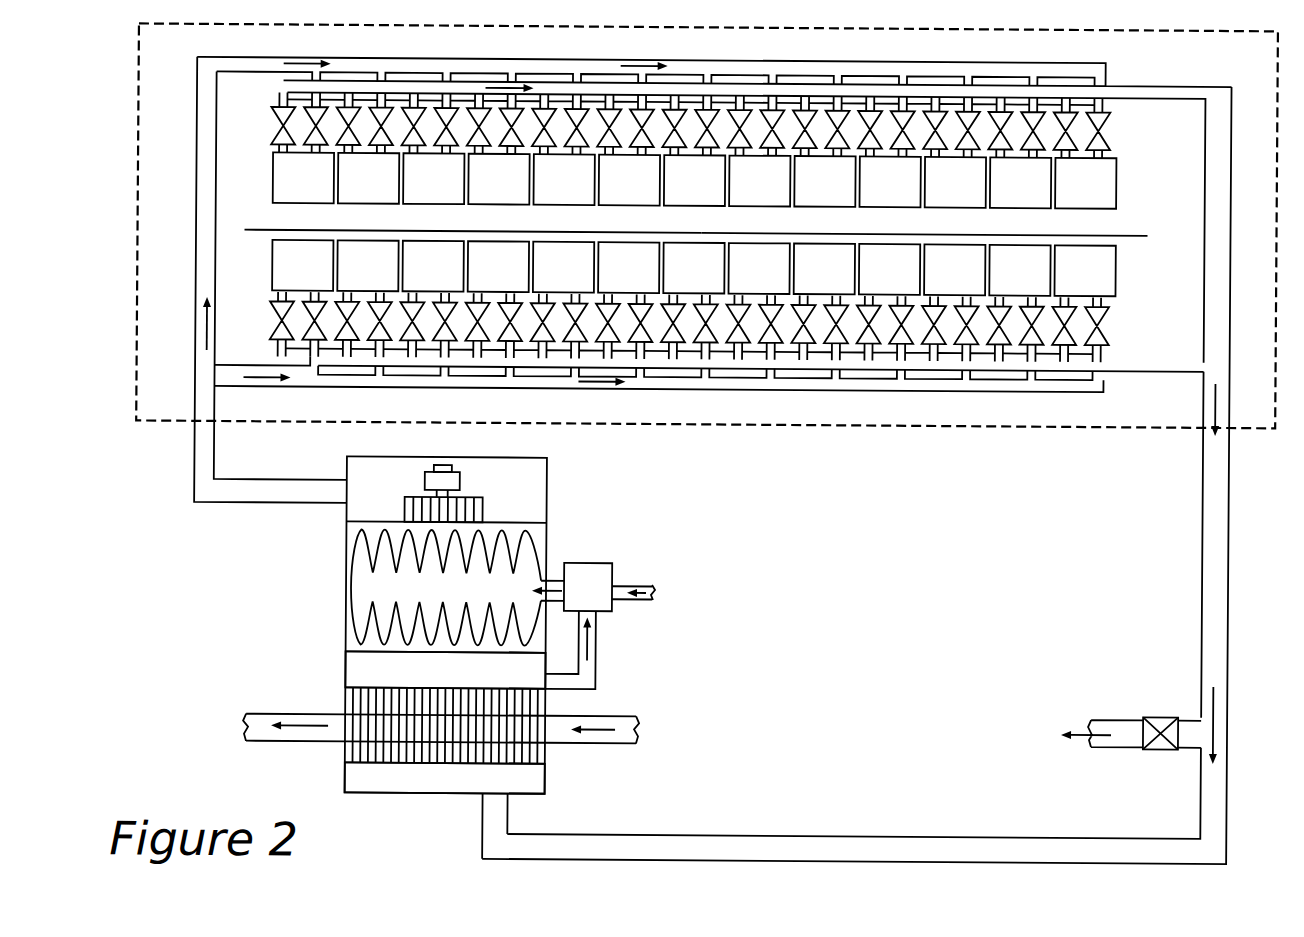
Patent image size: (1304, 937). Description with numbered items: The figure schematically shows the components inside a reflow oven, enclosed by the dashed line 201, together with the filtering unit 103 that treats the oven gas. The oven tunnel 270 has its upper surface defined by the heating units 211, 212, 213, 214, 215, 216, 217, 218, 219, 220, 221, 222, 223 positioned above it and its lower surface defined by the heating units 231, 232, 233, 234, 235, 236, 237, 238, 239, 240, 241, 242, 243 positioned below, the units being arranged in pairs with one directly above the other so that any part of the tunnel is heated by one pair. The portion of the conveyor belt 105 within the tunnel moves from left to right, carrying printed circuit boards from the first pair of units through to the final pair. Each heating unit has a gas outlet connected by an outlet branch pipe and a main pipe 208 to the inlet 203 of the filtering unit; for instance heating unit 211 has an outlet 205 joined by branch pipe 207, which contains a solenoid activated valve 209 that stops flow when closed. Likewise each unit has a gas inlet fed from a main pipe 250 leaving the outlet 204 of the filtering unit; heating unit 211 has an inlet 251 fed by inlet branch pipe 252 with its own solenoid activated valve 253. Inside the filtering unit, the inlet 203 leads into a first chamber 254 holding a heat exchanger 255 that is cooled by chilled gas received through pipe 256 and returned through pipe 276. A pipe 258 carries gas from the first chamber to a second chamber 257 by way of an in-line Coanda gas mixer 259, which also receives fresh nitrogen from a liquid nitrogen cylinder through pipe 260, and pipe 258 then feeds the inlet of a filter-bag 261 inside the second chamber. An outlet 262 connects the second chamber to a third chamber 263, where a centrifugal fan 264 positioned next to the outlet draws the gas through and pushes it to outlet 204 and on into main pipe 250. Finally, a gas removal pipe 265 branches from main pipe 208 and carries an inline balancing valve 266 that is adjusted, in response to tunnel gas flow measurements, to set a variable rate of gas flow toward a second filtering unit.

The filtering unit 103 is at (484, 609).
The conveyor belt 105 is at (1146, 232).
The dashed line 201 is at (907, 428).
The inlet 203 is at (485, 798).
The outlet 204 is at (345, 490).
The outlet 205 is at (281, 154).
The branch pipe 207 is at (277, 147).
The main pipe 208 is at (786, 92).
The solenoid activated valve 209 is at (278, 138).
The heating unit 211 is at (303, 177).
The heating unit 212 is at (368, 178).
The heating unit 213 is at (433, 178).
The heating unit 214 is at (498, 179).
The heating unit 215 is at (564, 179).
The heating unit 216 is at (629, 180).
The heating unit 217 is at (694, 180).
The heating unit 218 is at (759, 181).
The heating unit 219 is at (824, 181).
The heating unit 220 is at (890, 181).
The heating unit 221 is at (955, 182).
The heating unit 222 is at (1020, 182).
The heating unit 223 is at (1085, 183).
The heating unit 231 is at (302, 265).
The heating unit 232 is at (367, 265).
The heating unit 233 is at (433, 266).
The heating unit 234 is at (498, 266).
The heating unit 235 is at (563, 267).
The heating unit 236 is at (628, 267).
The heating unit 237 is at (693, 268).
The heating unit 238 is at (758, 268).
The heating unit 239 is at (824, 269).
The heating unit 240 is at (889, 269).
The heating unit 241 is at (954, 269).
The heating unit 242 is at (1019, 270).
The heating unit 243 is at (1084, 270).
The main pipe 250 is at (702, 70).
The inlet 251 is at (310, 155).
The inlet branch pipe 252 is at (316, 109).
The solenoid activated valve 253 is at (340, 97).
The first chamber 254 is at (463, 686).
The heat exchanger 255 is at (365, 707).
The pipe 256 is at (627, 742).
The second chamber 257 is at (350, 535).
The pipe 258 is at (597, 680).
The Coanda gas mixer 259 is at (607, 602).
The pipe 260 is at (653, 598).
The filter-bag 261 is at (354, 577).
The outlet 262 is at (460, 533).
The third chamber 263 is at (534, 486).
The centrifugal fan 264 is at (484, 503).
The gas removal pipe 265 is at (1185, 716).
The balancing valve 266 is at (1158, 750).
The tunnel 270 is at (691, 229).
The pipe 276 is at (264, 742).